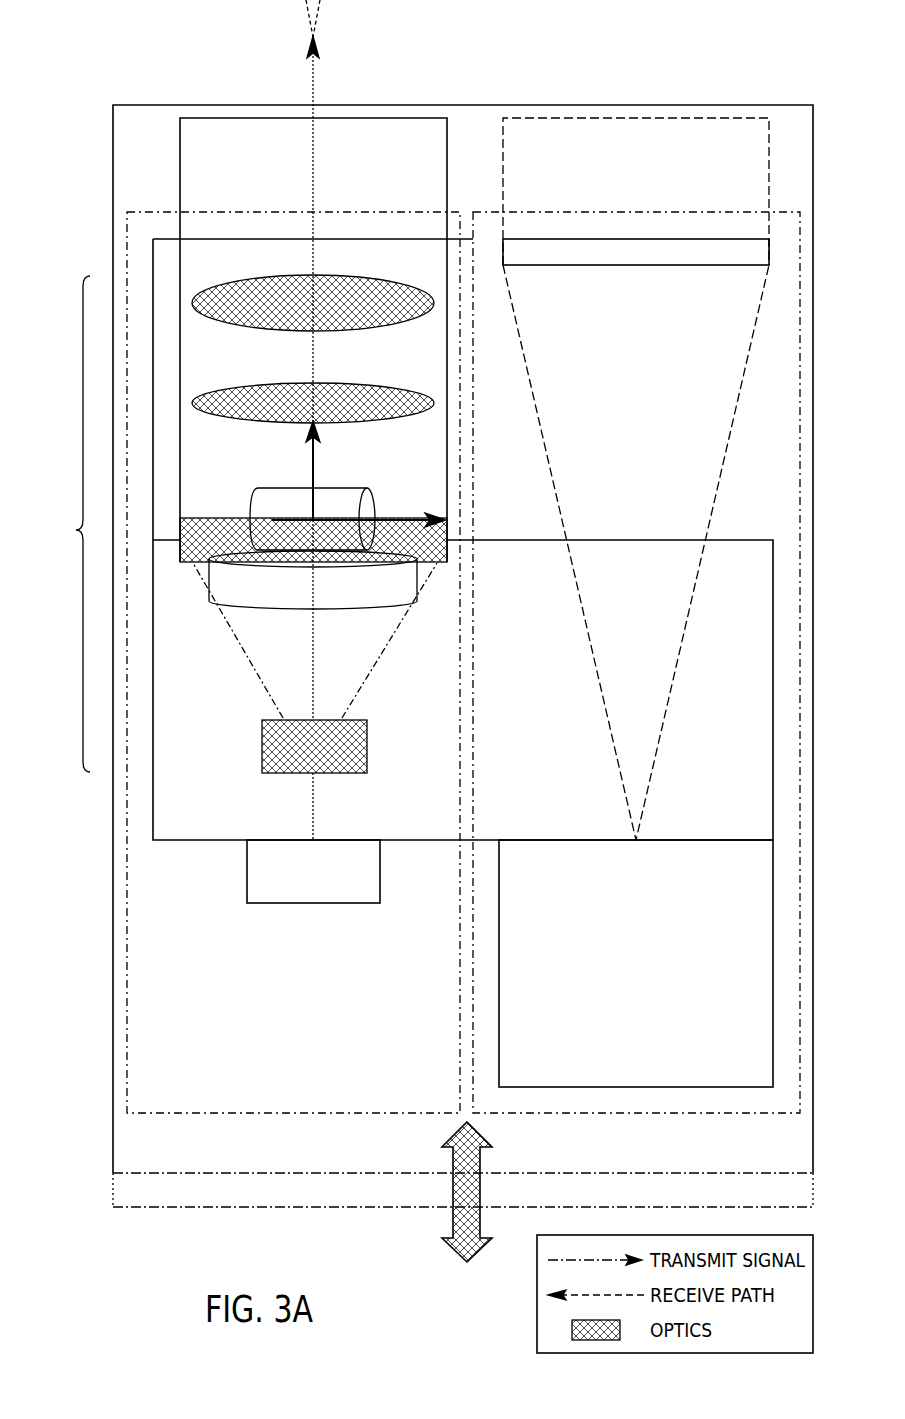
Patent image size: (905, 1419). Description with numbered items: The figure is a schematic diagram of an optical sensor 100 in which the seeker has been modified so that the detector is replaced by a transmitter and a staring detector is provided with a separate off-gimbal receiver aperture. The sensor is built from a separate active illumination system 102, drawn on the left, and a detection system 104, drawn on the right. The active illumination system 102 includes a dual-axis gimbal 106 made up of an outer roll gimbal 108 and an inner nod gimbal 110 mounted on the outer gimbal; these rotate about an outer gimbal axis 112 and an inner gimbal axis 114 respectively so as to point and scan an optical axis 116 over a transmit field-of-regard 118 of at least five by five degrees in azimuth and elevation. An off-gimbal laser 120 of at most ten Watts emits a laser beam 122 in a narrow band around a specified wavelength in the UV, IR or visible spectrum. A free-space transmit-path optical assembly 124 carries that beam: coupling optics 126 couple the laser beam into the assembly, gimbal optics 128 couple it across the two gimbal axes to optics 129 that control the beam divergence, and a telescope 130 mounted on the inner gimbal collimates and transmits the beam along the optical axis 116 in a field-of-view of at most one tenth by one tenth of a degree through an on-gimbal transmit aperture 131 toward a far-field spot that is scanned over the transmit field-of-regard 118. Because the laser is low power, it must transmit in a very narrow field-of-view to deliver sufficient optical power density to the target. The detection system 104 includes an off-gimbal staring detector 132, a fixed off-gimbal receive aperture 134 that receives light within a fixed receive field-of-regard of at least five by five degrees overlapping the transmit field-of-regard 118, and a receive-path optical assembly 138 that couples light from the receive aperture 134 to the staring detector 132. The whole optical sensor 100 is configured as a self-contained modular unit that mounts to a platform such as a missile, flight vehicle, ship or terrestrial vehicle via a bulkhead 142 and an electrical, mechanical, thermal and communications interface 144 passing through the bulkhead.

The optical sensor 100 is at (752, 38).
The active illumination system 102 is at (126, 987).
The detection system 104 is at (801, 881).
The dual-axis gimbal 106 is at (356, 468).
The outer gimbal 108 is at (332, 612).
The inner gimbal 110 is at (258, 490).
The outer gimbal axis 112 is at (311, 590).
The inner gimbal axis 114 is at (309, 463).
The optical axis 116 is at (316, 164).
The transmit field-of-regard 118 is at (322, 14).
The off-gimbal laser 120 is at (381, 871).
The laser beam 122 is at (316, 806).
The free-space transmit-path optical assembly 124 is at (64, 524).
The coupling optics 126 is at (368, 745).
The gimbal optics 128 is at (188, 566).
The divergence control optics 129 is at (348, 383).
The telescope 130 is at (358, 278).
The on-gimbal transmit aperture 131 is at (208, 231).
The off-gimbal staring detector 132 is at (775, 968).
The off-gimbal receive aperture 134 is at (680, 231).
The receive-path optical assembly 138 is at (641, 268).
The bulkhead 142 is at (112, 1191).
The interface 144 is at (455, 1250).